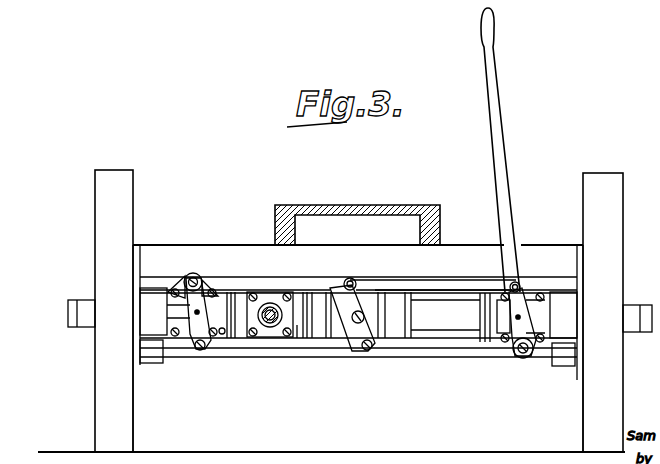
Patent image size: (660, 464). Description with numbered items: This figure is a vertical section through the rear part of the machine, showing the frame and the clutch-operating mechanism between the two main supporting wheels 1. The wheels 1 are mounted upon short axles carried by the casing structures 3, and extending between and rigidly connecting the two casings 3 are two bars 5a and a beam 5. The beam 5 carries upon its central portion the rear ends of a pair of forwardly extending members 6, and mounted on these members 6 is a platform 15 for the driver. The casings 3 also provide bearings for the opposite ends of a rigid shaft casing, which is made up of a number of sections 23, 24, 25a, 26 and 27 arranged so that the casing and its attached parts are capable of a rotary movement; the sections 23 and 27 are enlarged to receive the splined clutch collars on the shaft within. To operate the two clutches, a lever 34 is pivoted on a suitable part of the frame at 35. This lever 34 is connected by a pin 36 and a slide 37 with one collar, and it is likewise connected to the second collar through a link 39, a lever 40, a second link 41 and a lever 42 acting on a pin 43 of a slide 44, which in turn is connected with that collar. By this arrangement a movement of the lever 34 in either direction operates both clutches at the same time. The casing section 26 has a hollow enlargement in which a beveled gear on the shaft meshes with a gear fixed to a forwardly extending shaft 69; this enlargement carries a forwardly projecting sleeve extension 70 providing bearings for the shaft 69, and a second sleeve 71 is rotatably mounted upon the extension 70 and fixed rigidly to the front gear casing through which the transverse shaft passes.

The main supporting wheels 1 is at (105, 377).
The casing structures 3 is at (140, 378).
The beam 5 is at (225, 246).
The bars 5a is at (335, 360).
The forwardly extending members 6 is at (275, 233).
The platform 15 is at (360, 205).
The shaft casing section 23 is at (498, 343).
The shaft casing section 24 is at (450, 318).
The shaft casing section 25a is at (345, 287).
The shaft casing section 26 is at (297, 338).
The shaft casing section 27 is at (182, 340).
The lever 34 is at (505, 184).
The pivot 35 is at (522, 358).
The pin 36 is at (508, 340).
The slide 37 is at (543, 318).
The link 39 is at (408, 278).
The lever 40 is at (353, 330).
The second link 41 is at (272, 346).
The lever 42 is at (195, 340).
The pin 43 is at (195, 312).
The slide 44 is at (220, 297).
The forwardly extending shaft 69 is at (275, 308).
The sleeve extension 70 is at (270, 306).
The second sleeve 71 is at (268, 328).